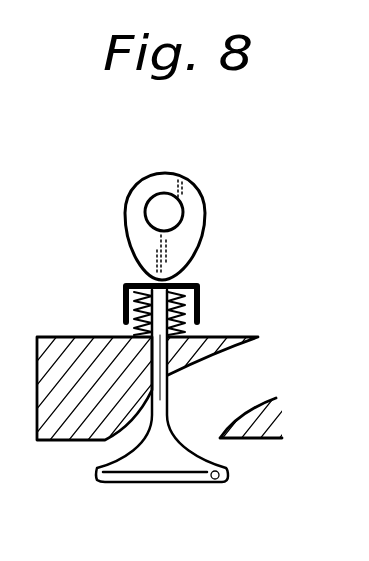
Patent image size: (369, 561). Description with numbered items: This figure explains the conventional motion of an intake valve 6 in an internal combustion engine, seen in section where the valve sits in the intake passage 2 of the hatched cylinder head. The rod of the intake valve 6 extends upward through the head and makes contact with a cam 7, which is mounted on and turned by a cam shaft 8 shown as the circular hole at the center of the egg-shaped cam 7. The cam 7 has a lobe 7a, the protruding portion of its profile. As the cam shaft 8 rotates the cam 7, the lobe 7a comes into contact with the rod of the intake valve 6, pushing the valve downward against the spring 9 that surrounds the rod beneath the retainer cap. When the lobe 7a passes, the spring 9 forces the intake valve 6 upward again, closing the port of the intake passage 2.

The intake passage 2 is at (232, 387).
The intake valve 6 is at (167, 468).
The cam 7 is at (191, 196).
The lobe 7a is at (172, 255).
The cam shaft 8 is at (166, 205).
The spring 9 is at (140, 333).